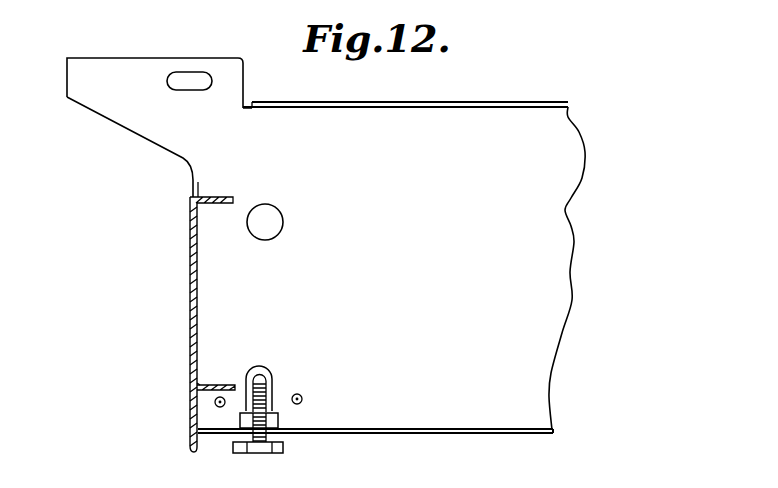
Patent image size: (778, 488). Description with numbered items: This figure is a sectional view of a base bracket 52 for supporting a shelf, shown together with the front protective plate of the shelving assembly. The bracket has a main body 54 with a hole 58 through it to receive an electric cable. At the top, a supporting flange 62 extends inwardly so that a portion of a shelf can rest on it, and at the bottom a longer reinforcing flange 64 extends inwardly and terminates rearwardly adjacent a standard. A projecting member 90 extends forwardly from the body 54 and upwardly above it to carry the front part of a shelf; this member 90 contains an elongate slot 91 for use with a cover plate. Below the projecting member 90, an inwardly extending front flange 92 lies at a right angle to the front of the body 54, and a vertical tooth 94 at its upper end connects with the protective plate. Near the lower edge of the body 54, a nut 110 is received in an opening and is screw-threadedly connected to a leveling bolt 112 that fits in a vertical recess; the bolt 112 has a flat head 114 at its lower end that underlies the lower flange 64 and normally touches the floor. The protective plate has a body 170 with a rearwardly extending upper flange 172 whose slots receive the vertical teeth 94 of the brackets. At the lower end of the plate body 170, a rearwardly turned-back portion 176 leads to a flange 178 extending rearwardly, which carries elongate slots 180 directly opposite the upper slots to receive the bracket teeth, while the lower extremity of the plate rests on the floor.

The base bracket 52 is at (340, 253).
The main body 54 is at (543, 233).
The hole 58 is at (270, 215).
The supporting flange 62 is at (505, 78).
The reinforcing flange 64 is at (430, 428).
The projecting member 90 is at (128, 72).
The elongate slot 91 is at (189, 80).
The front flange 92 is at (198, 292).
The vertical tooth 94 is at (197, 190).
The nut 110 is at (278, 420).
The leveling bolt 112 is at (266, 386).
The flat head 114 is at (283, 446).
The body 170 is at (191, 325).
The upper flange 172 is at (222, 196).
The turn-back portion 176 is at (221, 413).
The flange 178 is at (233, 383).
The elongate slots 180 is at (200, 382).